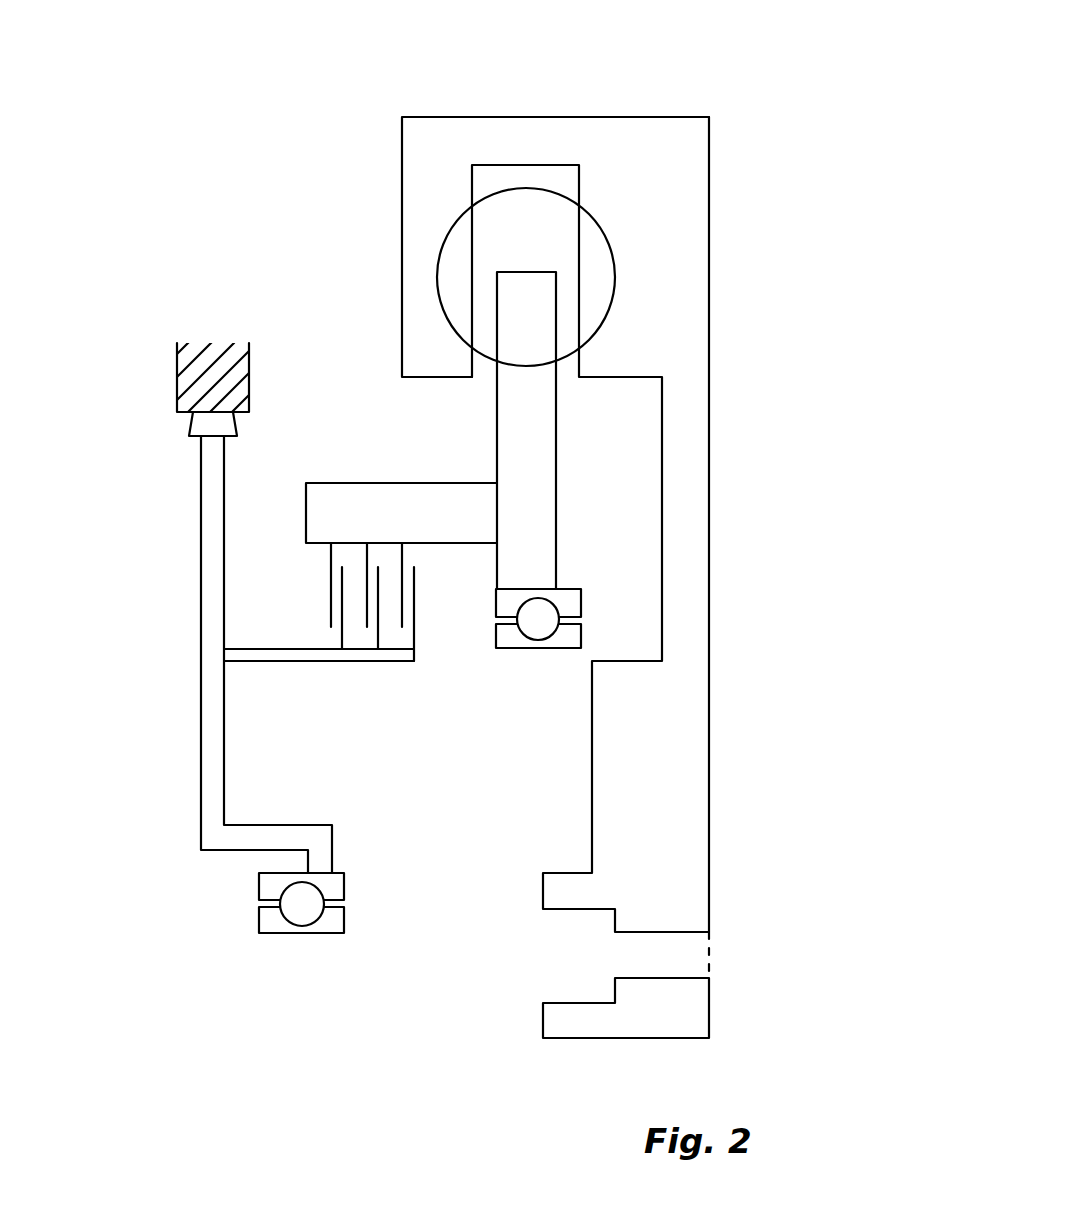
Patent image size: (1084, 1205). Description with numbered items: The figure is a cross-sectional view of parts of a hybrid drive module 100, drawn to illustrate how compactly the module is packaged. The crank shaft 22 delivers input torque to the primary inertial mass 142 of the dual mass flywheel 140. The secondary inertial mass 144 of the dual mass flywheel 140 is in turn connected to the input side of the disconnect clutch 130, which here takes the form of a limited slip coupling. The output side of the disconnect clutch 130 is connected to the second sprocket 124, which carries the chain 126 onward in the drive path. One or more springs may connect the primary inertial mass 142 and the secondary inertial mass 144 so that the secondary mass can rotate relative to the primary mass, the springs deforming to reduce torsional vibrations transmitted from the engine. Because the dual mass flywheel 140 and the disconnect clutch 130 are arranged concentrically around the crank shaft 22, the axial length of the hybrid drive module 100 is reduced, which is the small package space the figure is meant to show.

The hybrid drive module 100 is at (731, 74).
The dual mass flywheel 140 is at (741, 228).
The primary inertial mass 142 is at (697, 307).
The secondary inertial mass 144 is at (530, 480).
The disconnect clutch 130 is at (430, 625).
The second sprocket 124 is at (208, 497).
The chain 126 is at (187, 376).
The crank shaft 22 is at (685, 961).